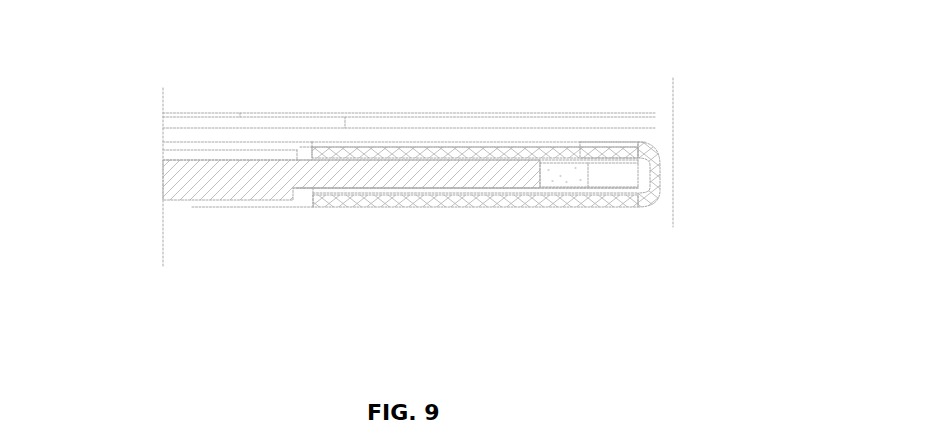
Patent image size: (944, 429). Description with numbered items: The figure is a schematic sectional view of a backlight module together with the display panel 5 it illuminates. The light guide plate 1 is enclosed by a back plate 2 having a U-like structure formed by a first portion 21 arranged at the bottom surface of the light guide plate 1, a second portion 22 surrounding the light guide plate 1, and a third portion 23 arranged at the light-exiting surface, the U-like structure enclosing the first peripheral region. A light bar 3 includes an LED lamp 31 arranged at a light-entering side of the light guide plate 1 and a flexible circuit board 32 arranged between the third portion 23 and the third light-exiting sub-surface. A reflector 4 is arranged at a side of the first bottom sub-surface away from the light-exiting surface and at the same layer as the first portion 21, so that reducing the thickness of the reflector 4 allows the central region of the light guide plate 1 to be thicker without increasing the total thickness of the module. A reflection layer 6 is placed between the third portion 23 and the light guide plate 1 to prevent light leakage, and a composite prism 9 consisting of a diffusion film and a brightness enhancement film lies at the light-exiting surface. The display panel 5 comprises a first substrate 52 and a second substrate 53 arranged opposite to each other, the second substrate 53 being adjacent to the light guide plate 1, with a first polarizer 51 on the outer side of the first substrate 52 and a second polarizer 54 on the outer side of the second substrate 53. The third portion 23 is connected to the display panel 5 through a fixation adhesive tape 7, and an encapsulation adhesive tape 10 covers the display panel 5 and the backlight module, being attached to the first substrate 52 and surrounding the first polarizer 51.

The light guide plate 1 is at (495, 171).
The back plate 2 is at (525, 152).
The first portion 21 is at (622, 206).
The second portion 22 is at (666, 179).
The third portion 23 is at (647, 144).
The light bar 3 is at (467, 251).
The LED lamp 31 is at (559, 185).
The flexible circuit board 32 is at (519, 200).
The reflector 4 is at (248, 205).
The display panel 5 is at (357, 110).
The first polarizer 51 is at (160, 110).
The first substrate 52 is at (160, 121).
The second substrate 53 is at (160, 131).
The second polarizer 54 is at (194, 140).
The reflection layer 6 is at (411, 153).
The fixation adhesive tape 7 is at (580, 140).
The composite prism 9 is at (160, 159).
The encapsulation adhesive tape 10 is at (268, 112).